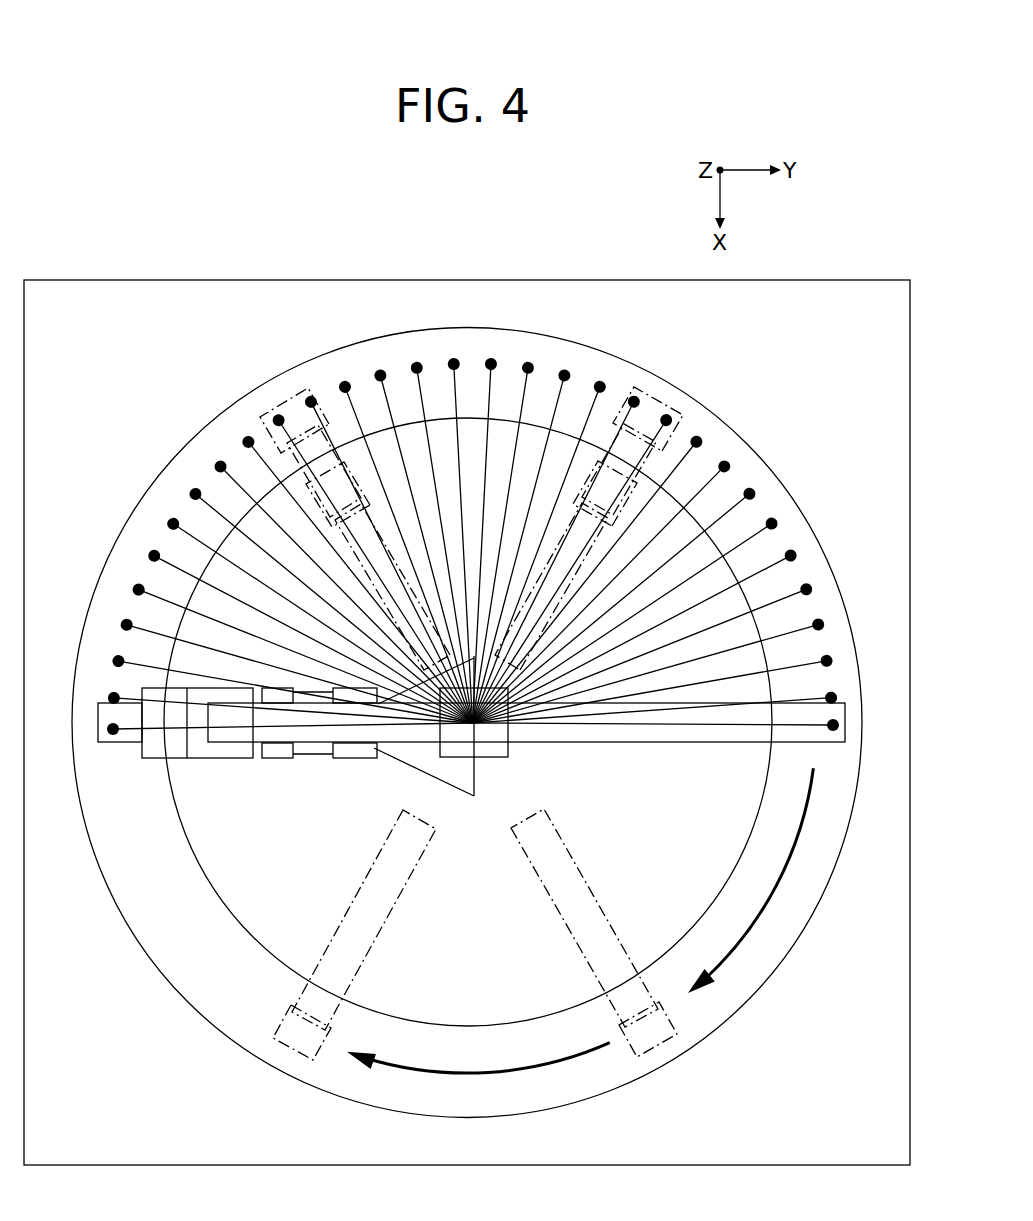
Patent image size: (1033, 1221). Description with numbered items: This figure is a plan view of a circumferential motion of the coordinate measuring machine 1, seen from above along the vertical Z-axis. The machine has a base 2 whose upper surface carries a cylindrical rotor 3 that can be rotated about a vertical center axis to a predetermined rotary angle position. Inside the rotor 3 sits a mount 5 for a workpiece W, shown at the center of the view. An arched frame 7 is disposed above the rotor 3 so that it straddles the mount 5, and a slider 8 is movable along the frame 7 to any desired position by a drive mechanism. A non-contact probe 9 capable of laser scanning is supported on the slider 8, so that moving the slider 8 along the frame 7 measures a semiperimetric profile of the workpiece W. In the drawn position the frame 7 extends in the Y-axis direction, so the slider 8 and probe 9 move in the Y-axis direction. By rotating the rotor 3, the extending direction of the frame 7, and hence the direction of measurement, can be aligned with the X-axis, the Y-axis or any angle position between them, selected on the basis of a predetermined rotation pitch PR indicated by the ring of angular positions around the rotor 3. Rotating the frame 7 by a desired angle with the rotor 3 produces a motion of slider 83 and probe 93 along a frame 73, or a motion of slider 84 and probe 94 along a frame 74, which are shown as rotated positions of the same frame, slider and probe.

The coordinate measuring machine 1 is at (126, 192).
The base 2 is at (76, 282).
The rotor 3 is at (158, 470).
The mount 5 is at (693, 850).
The frame 7 is at (818, 735).
The slider 8 is at (150, 756).
The probe 9 is at (273, 759).
The frame 73 is at (650, 1030).
The frame 74 is at (310, 1030).
The slider 83 is at (338, 428).
The slider 84 is at (695, 470).
The probe 93 is at (410, 430).
The probe 94 is at (700, 510).
The rotation pitch PR is at (134, 547).
The workpiece W is at (478, 762).